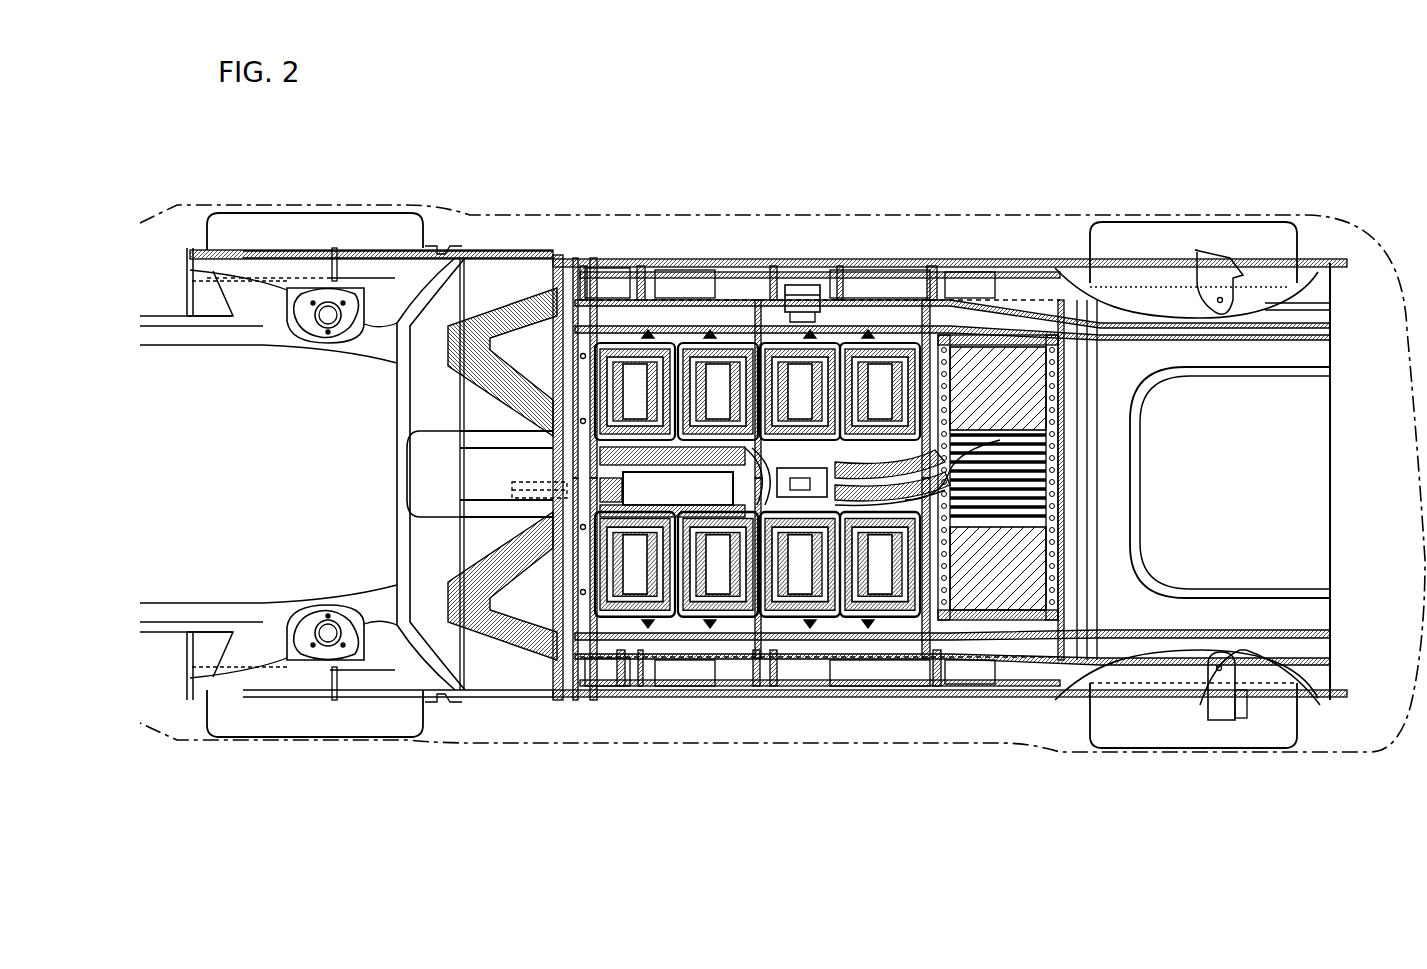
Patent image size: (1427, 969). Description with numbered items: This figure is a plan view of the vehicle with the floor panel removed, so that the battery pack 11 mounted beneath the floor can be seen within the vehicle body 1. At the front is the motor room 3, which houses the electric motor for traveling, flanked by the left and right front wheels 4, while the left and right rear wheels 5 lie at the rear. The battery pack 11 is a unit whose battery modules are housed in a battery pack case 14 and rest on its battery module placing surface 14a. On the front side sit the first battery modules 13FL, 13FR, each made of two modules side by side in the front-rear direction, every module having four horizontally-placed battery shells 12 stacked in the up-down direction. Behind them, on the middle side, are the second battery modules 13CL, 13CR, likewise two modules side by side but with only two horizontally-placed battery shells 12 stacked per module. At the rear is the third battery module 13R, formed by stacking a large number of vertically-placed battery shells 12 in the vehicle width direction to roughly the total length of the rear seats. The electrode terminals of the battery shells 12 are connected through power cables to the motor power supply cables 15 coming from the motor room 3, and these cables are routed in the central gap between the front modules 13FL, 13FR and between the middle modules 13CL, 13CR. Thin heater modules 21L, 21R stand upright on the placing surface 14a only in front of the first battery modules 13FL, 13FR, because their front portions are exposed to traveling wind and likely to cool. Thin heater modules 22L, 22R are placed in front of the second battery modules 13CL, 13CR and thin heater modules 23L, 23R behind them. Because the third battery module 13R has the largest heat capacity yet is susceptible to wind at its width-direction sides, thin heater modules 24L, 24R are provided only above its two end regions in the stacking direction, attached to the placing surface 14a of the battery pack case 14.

The vehicle body 1 is at (1318, 210).
The motor room 3 is at (229, 476).
The front wheels 4 is at (312, 212).
The rear wheels 5 is at (1197, 222).
The battery pack 11 is at (945, 258).
The battery shells 12 is at (605, 343).
The third battery module 13R is at (1017, 262).
The first battery module 13FR is at (708, 330).
The second battery module 13CR is at (812, 330).
The first battery module 13FL is at (710, 628).
The second battery module 13CL is at (868, 628).
The battery pack case 14 is at (768, 300).
The battery module placing surface 14a is at (793, 285).
The motor power supply cables 15 is at (545, 487).
The thin heater module 21R is at (598, 300).
The thin heater module 21L is at (598, 640).
The thin heater module 22R is at (758, 300).
The thin heater module 22L is at (758, 640).
The thin heater module 23R is at (930, 300).
The thin heater module 23L is at (928, 640).
The thin heater module 24R is at (1010, 385).
The thin heater module 24L is at (1010, 572).